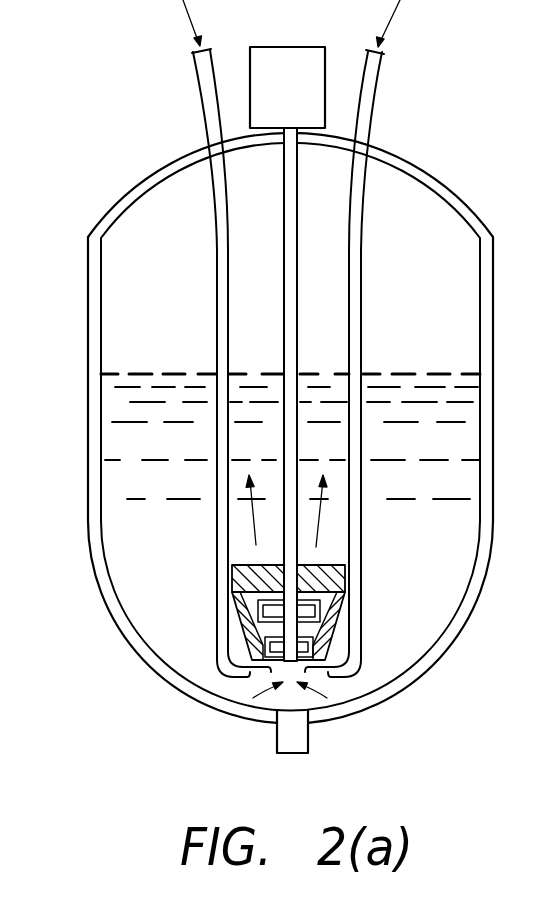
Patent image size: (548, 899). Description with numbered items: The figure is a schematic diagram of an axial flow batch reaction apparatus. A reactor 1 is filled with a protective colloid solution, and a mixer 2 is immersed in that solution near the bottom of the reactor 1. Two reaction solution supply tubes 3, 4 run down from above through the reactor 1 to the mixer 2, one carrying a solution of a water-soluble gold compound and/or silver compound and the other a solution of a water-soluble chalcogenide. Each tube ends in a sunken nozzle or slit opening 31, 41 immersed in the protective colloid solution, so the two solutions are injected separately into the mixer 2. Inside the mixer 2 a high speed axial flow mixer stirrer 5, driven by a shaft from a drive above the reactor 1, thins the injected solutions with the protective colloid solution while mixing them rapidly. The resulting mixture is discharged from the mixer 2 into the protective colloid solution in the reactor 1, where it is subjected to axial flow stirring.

The reactor 1 is at (87, 536).
The mixer 2 is at (241, 631).
The reaction solution supply tube 3 is at (207, 108).
The reaction solution supply tube 4 is at (370, 109).
The mixer stirrer 5 is at (307, 632).
The sunken nozzle or slit opening 31 is at (247, 676).
The sunken nozzle or slit opening 41 is at (332, 676).